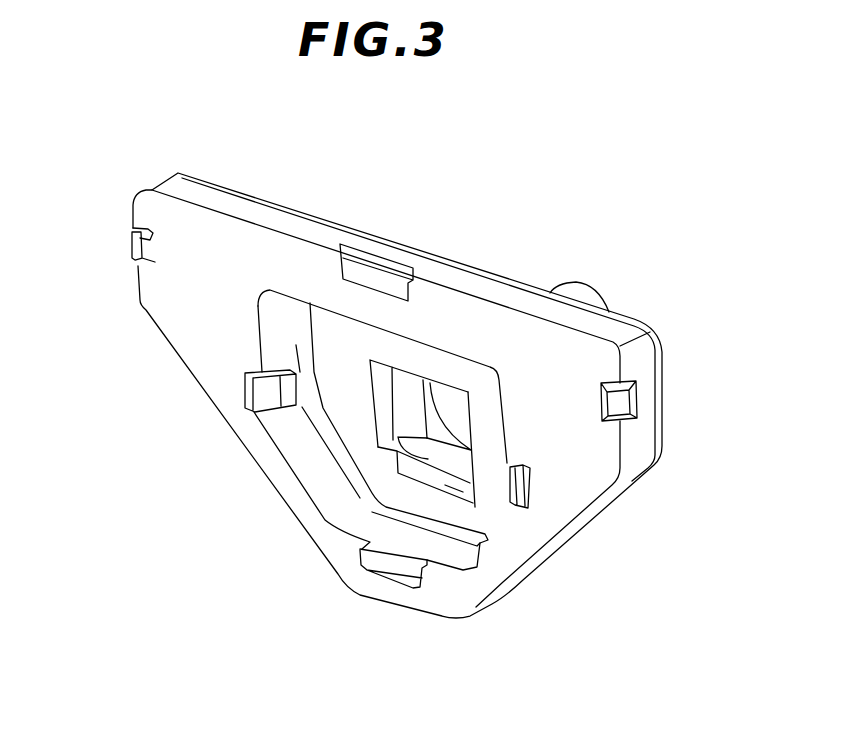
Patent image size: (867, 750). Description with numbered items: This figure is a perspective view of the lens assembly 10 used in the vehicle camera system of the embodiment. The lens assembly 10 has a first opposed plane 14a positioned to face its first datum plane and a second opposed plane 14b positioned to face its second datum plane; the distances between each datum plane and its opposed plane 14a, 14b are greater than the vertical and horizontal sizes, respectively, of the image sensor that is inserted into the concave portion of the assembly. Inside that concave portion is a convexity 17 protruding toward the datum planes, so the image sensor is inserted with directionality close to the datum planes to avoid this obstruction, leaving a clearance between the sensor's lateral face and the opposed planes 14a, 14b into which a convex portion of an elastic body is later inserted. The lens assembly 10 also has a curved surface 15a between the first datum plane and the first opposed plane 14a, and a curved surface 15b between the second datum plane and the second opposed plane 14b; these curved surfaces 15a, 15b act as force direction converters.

The lens assembly 10 is at (216, 323).
The first opposed plane 14a is at (470, 481).
The second opposed plane 14b is at (384, 408).
The curved surface 15a is at (457, 467).
The curved surface 15b is at (407, 395).
The convexity 17 is at (390, 462).